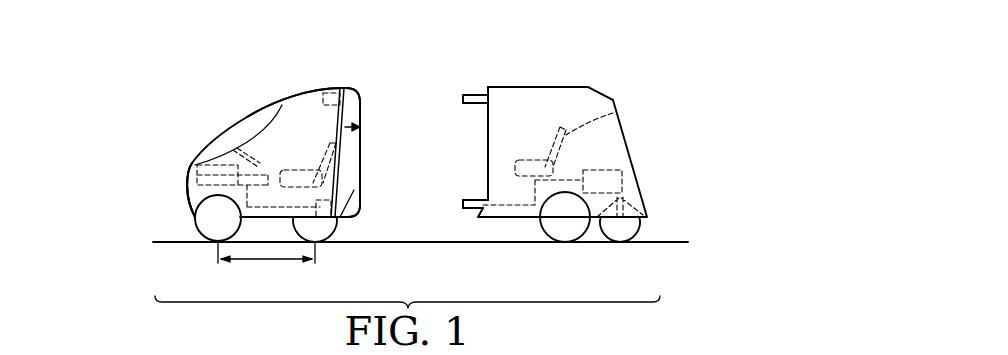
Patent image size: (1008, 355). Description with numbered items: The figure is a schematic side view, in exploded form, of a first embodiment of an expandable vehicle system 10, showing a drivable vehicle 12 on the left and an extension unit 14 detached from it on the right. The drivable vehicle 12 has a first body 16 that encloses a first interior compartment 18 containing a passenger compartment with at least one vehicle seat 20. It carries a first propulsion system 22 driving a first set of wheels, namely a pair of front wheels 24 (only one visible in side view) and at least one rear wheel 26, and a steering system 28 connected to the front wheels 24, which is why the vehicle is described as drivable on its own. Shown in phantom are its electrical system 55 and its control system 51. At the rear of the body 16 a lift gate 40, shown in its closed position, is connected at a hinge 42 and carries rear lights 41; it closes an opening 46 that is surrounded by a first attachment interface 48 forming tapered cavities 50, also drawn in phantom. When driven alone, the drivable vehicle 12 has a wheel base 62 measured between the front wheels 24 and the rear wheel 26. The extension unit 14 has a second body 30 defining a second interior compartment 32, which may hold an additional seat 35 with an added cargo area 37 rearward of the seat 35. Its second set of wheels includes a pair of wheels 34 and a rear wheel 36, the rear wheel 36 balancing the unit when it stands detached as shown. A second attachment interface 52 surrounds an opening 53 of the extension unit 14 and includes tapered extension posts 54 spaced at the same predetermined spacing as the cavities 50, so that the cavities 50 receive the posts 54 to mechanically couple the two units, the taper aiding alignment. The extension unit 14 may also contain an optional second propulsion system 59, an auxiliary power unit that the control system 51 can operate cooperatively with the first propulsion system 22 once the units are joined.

The expandable vehicle system 10 is at (98, 90).
The drivable vehicle 12 is at (260, 110).
The extension unit 14 is at (630, 148).
The first body 16 is at (297, 93).
The first interior compartment 18 is at (297, 128).
The vehicle seat 20 is at (366, 137).
The first propulsion system 22 is at (185, 179).
The front wheels 24 is at (209, 229).
The rear wheel 26 is at (293, 231).
The steering system 28 is at (188, 163).
The second body 30 is at (543, 87).
The second interior compartment 32 is at (512, 124).
The wheels 34 is at (547, 227).
The additional seat 35 is at (613, 113).
The rear wheel 36 is at (643, 230).
The added cargo area 37 is at (600, 154).
The lift gate 40 is at (362, 172).
The rear lights 41 is at (360, 207).
The hinge 42 is at (341, 88).
The opening 46 is at (363, 120).
The first attachment interface 48 is at (357, 90).
The tapered cavities 50 is at (333, 85).
The control system 51 is at (283, 161).
The second attachment interface 52 is at (488, 117).
The opening 53 is at (478, 153).
The tapered extension posts 54 is at (477, 95).
The electrical system 55 is at (227, 148).
The second propulsion system 59 is at (636, 172).
The wheel base 62 is at (267, 263).